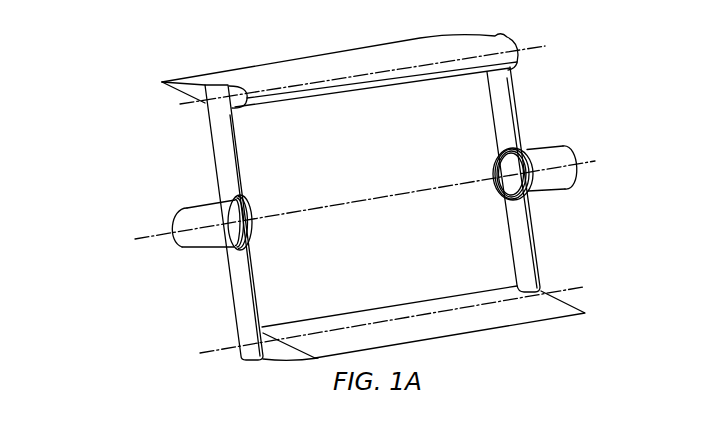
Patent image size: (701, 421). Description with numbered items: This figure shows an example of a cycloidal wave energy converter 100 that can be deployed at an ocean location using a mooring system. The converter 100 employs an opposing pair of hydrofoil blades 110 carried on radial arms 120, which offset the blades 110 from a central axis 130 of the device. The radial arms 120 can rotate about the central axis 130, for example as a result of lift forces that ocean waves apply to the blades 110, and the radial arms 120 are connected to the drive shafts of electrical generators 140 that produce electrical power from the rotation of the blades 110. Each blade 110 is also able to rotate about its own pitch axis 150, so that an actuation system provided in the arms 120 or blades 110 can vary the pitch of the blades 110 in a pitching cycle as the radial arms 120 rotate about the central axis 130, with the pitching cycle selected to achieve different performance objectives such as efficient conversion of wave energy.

The cycloidal wave energy converter 100 is at (72, 76).
The blade 110 is at (278, 63).
The radial arm 120 is at (238, 165).
The central axis 130 is at (153, 237).
The electrical generator 140 is at (550, 147).
The pitch axis 150 is at (545, 45).